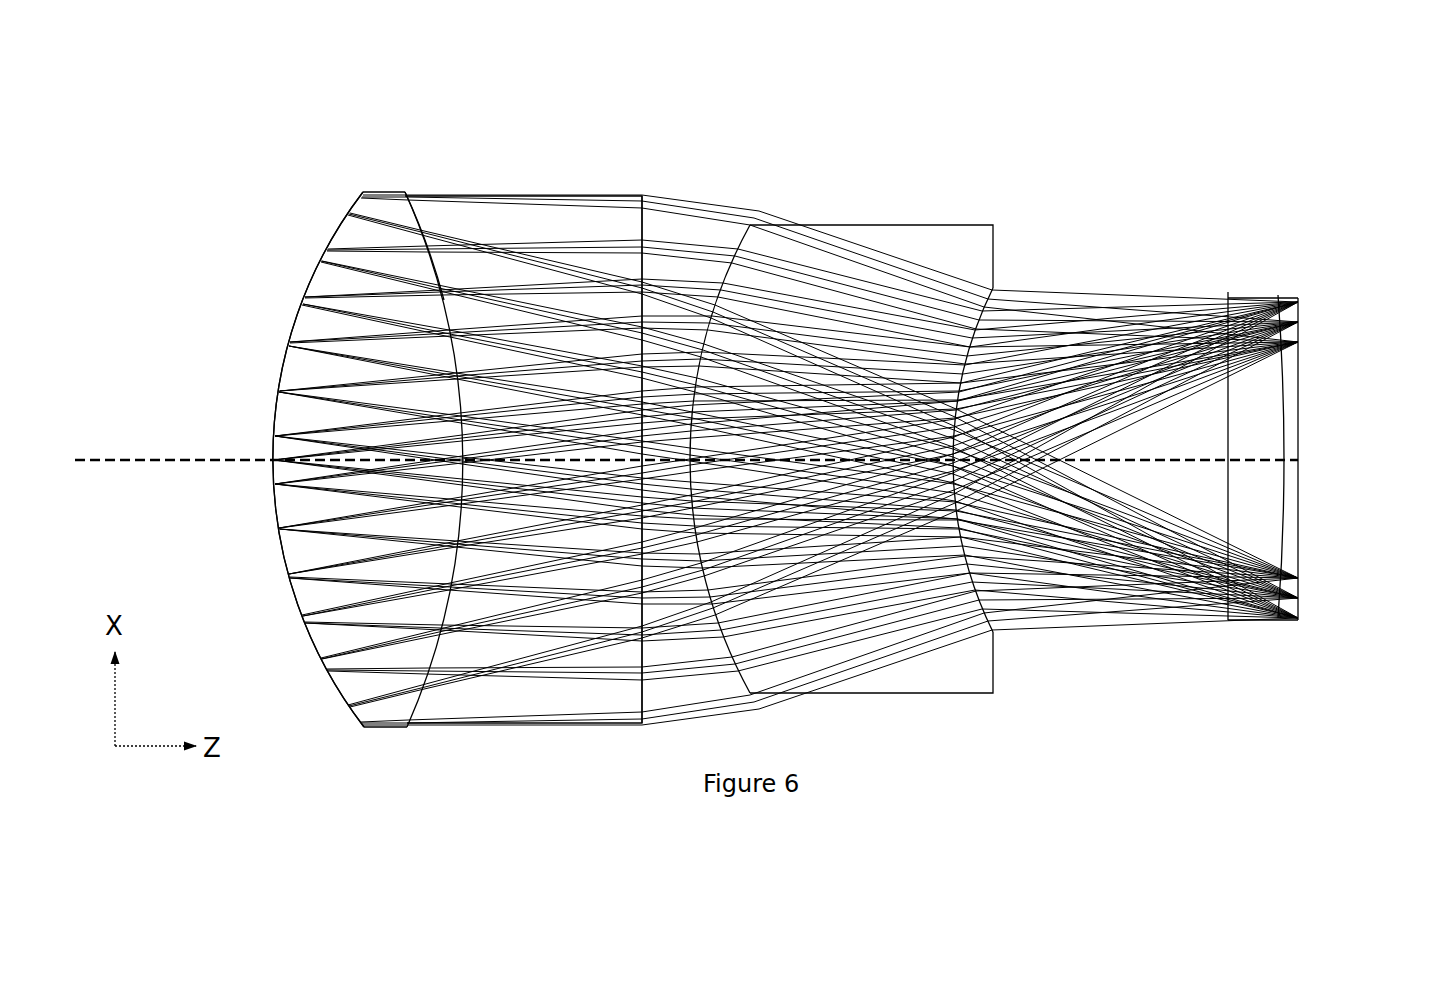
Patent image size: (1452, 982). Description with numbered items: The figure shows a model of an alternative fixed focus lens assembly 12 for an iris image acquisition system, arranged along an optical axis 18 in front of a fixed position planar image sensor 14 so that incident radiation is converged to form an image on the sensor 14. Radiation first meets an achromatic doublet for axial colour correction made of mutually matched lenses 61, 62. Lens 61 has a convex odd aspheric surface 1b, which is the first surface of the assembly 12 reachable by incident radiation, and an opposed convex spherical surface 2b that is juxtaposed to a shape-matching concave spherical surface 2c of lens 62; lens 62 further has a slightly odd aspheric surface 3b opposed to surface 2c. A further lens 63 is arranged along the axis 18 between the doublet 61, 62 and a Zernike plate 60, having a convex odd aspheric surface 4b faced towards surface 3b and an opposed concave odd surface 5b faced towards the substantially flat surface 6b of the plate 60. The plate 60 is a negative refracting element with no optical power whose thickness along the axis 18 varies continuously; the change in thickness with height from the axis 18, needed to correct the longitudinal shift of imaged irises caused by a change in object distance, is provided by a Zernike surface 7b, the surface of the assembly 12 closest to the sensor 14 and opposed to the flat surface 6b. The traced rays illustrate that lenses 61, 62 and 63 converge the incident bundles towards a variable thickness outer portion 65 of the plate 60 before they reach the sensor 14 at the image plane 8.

The convex odd aspheric surface 1b is at (300, 270).
The convex spherical surface 2b is at (428, 262).
The concave spherical surface 2c is at (437, 275).
The slightly odd aspheric surface 3b is at (641, 180).
The convex odd aspheric surface 4b is at (732, 222).
The concave odd surface 5b is at (1010, 273).
The flat surface 6b is at (1226, 288).
The Zernike surface 7b is at (1278, 290).
The image plane / display 8 is at (1294, 436).
The lens assembly 12 is at (1113, 685).
The image sensor 14 is at (1313, 372).
The optical axis 18 is at (686, 444).
The Zernike plate 60 is at (1273, 630).
The lens 61 is at (268, 577).
The lens 62 is at (531, 742).
The lens 63 is at (897, 693).
The variable thickness outer portion 65 is at (1303, 323).